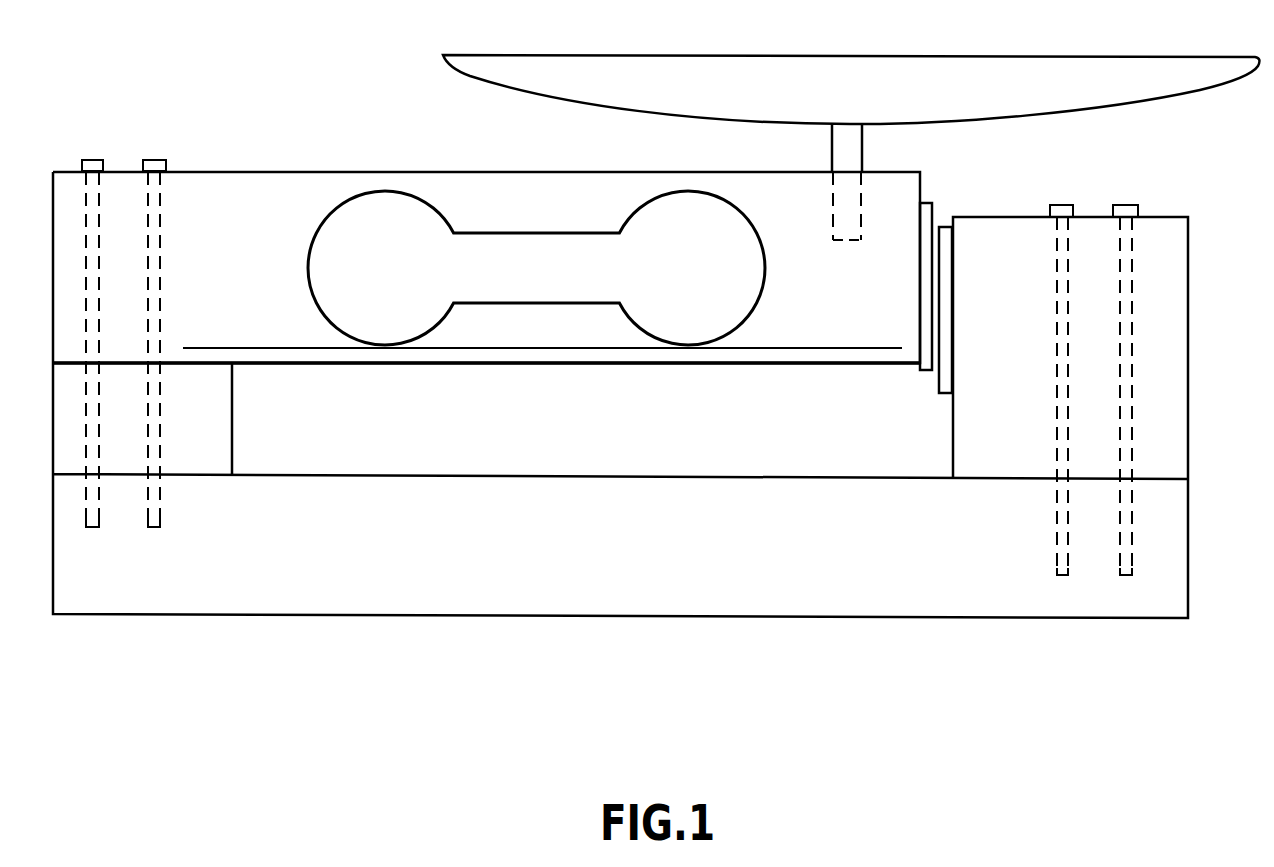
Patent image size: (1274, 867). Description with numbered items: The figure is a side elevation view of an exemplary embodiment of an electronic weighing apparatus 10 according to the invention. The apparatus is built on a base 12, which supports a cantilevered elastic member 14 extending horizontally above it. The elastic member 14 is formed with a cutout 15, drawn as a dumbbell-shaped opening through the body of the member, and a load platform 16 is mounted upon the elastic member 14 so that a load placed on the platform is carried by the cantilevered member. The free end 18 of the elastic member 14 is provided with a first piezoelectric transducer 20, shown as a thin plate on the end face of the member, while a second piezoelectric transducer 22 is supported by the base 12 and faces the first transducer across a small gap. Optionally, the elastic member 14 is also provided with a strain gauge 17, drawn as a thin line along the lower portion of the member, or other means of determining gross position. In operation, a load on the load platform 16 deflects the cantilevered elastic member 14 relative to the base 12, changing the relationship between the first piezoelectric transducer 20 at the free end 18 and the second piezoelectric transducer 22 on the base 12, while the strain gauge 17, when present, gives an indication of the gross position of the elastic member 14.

The electronic weighing apparatus 10 is at (376, 728).
The base 12 is at (618, 618).
The cantilevered elastic member 14 is at (210, 172).
The cutout 15 is at (388, 191).
The load platform 16 is at (952, 55).
The strain gauge 17 is at (257, 349).
The free end 18 is at (892, 173).
The first piezoelectric transducer 20 is at (923, 372).
The second piezoelectric transducer 22 is at (943, 227).